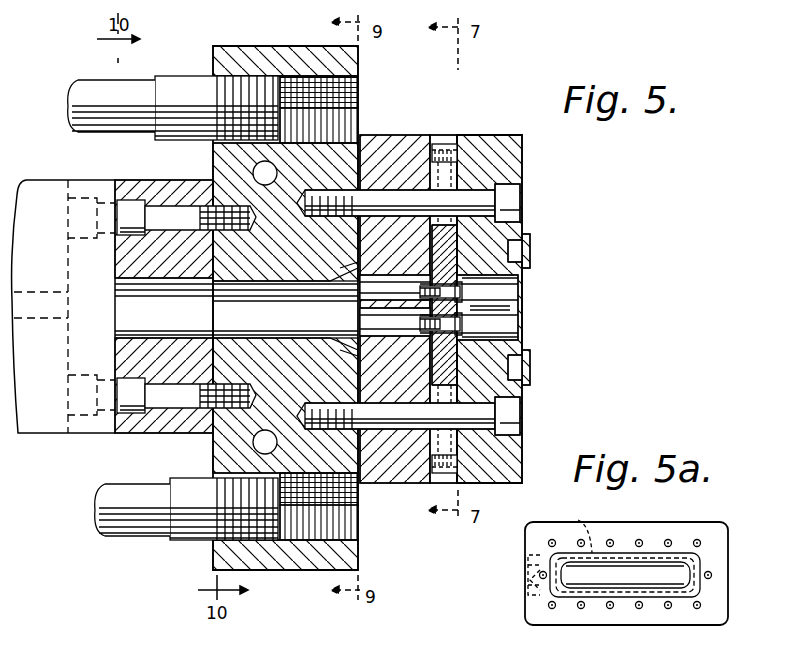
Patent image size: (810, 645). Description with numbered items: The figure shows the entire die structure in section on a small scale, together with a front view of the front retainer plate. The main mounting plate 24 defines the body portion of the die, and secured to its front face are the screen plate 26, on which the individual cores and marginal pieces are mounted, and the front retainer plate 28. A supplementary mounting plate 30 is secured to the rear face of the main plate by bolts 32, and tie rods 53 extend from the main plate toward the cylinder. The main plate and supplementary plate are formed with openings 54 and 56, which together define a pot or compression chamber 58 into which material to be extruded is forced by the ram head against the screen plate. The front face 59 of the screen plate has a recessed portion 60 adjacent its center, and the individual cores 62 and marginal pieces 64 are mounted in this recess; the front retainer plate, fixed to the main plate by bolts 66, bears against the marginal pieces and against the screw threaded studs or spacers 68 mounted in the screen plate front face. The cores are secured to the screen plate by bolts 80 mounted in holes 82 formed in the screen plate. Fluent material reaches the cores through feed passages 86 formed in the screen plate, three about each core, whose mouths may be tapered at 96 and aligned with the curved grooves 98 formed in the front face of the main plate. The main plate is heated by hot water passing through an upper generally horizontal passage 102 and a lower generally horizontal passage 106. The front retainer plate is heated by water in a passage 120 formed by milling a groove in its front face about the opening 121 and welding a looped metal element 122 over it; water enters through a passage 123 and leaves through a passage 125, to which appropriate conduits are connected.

In FIG. 5, the main mounting plate 24 is at (360, 58).
In FIG. 5, the screen plate 26 is at (405, 135).
In FIG. 5, the front retainer plate 28 is at (522, 170).
In FIG. 5a, the front retainer plate 28 is at (722, 575).
In FIG. 5, the supplementary mounting plate 30 is at (115, 362).
In FIG. 5, the bolts 32 is at (160, 205).
In FIG. 5, the tie rods 53 is at (180, 90).
In FIG. 5, the opening 54 is at (140, 335).
In FIG. 5, the opening 56 is at (320, 338).
In FIG. 5, the compression chamber 58 is at (104, 296).
In FIG. 5, the front face 59 is at (455, 170).
In FIG. 5, the recessed portion 60 is at (452, 232).
In FIG. 5, the cores 62 is at (510, 308).
In FIG. 5, the marginal pieces 64 is at (518, 278).
In FIG. 5, the bolts 66 is at (520, 212).
In FIG. 5a, the bolts 66 is at (708, 575).
In FIG. 5, the screw threaded studs or spacers 68 is at (450, 142).
In FIG. 5, the bolts 80 is at (518, 292).
In FIG. 5, the holes 82 is at (403, 284).
In FIG. 5, the passage 86 is at (380, 268).
In FIG. 5, the tapered mouth 96 is at (358, 300).
In FIG. 5, the curved grooves 98 is at (330, 288).
In FIG. 5, the upper horizontal passage 102 is at (253, 173).
In FIG. 5, the lower horizontal passage 106 is at (253, 442).
In FIG. 5, the passage 120 is at (522, 368).
In FIG. 5a, the passage 120 is at (590, 520).
In FIG. 5, the opening 121 is at (522, 330).
In FIG. 5a, the opening 121 is at (655, 565).
In FIG. 5, the looped metal element 122 is at (530, 258).
In FIG. 5a, the looped metal element 122 is at (620, 553).
In FIG. 5a, the passage 123 is at (526, 551).
In FIG. 5a, the passage 125 is at (528, 592).